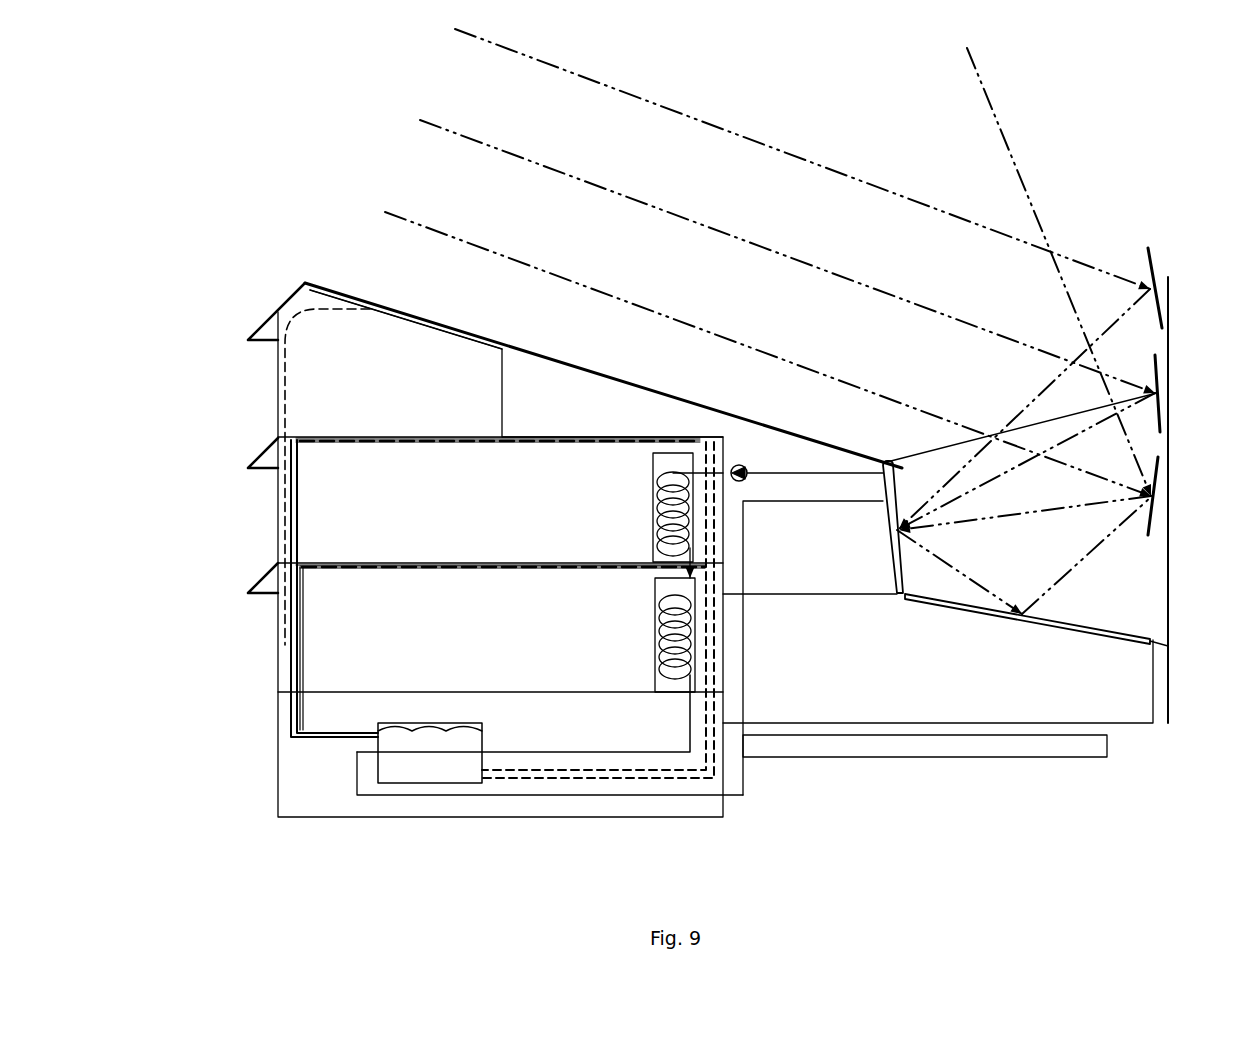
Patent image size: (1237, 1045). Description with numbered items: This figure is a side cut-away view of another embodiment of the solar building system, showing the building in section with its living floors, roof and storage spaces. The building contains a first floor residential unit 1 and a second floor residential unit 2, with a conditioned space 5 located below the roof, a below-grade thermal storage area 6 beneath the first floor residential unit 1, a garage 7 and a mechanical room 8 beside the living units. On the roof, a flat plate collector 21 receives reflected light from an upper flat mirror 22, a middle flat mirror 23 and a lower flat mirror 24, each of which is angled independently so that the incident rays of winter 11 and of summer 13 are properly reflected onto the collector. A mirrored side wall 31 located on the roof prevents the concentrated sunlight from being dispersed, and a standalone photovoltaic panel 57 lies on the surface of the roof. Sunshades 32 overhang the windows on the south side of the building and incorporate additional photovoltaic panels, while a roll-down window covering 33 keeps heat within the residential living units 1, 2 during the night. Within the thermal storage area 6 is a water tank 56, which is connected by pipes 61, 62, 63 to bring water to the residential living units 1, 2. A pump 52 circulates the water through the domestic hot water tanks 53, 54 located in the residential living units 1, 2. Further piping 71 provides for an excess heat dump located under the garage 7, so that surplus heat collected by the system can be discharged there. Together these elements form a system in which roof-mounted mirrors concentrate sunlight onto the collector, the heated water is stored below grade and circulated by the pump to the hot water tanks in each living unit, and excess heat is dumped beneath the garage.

The first floor residential unit 1 is at (625, 660).
The second floor residential unit 2 is at (625, 528).
The conditioned space 5 is at (455, 386).
The below-grade thermal storage area 6 is at (470, 730).
The garage 7 is at (1055, 680).
The mechanical room 8 is at (860, 560).
The winter incident rays 11 is at (700, 120).
The summer incident rays 13 is at (1015, 160).
The flat plate collector 21 is at (885, 460).
The upper flat mirror 22 is at (1162, 296).
The middle flat mirror 23 is at (1160, 390).
The lower flat mirror 24 is at (1155, 505).
The mirrored side wall 31 is at (1035, 420).
The sunshades 32 is at (270, 330).
The roll-down window covering 33 is at (300, 298).
The pump 52 is at (752, 472).
The domestic hot water tank 53 is at (673, 453).
The domestic hot water tank 54 is at (657, 608).
The water tank 56 is at (430, 790).
The standalone photovoltaic panel 57 is at (1065, 622).
The pipe 61 is at (392, 437).
The pipe 62 is at (300, 660).
The pipe 63 is at (707, 753).
The piping 71 is at (925, 757).